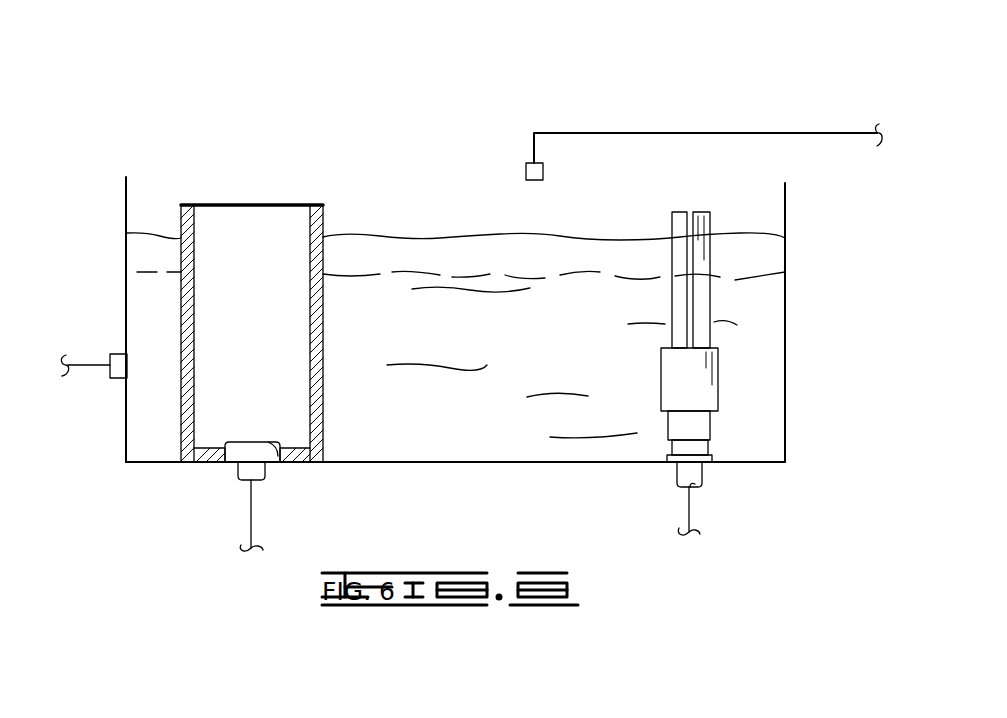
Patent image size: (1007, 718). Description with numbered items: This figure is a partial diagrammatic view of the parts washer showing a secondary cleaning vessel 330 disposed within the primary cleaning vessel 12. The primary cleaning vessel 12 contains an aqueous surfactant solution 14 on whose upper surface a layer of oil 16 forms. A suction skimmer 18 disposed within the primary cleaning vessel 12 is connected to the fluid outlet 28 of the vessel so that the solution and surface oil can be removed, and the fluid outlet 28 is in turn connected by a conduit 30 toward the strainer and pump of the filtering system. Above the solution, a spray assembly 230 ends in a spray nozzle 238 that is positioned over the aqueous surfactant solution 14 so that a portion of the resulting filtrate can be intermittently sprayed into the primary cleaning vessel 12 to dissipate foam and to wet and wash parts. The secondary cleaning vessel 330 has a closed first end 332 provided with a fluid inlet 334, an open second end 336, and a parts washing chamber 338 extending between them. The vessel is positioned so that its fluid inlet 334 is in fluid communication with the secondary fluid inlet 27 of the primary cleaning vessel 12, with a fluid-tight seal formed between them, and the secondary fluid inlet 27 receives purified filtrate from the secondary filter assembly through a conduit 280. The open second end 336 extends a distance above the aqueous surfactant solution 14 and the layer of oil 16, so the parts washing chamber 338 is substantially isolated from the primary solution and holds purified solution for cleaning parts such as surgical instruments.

The primary cleaning vessel 12 is at (124, 184).
The aqueous surfactant solution 14 is at (487, 350).
The layer of oil 16 is at (533, 264).
The suction skimmer 18 is at (637, 352).
The secondary fluid inlet 27 is at (233, 458).
The fluid outlet 28 is at (702, 478).
The conduit 30 is at (683, 508).
The spray assembly 230 is at (675, 84).
The spray nozzle 238 is at (526, 172).
The conduit 280 is at (250, 512).
The secondary cleaning vessel 330 is at (327, 333).
The closed first end 332 is at (297, 463).
The fluid inlet 334 is at (279, 446).
The open second end 336 is at (285, 205).
The parts washing chamber 338 is at (243, 309).